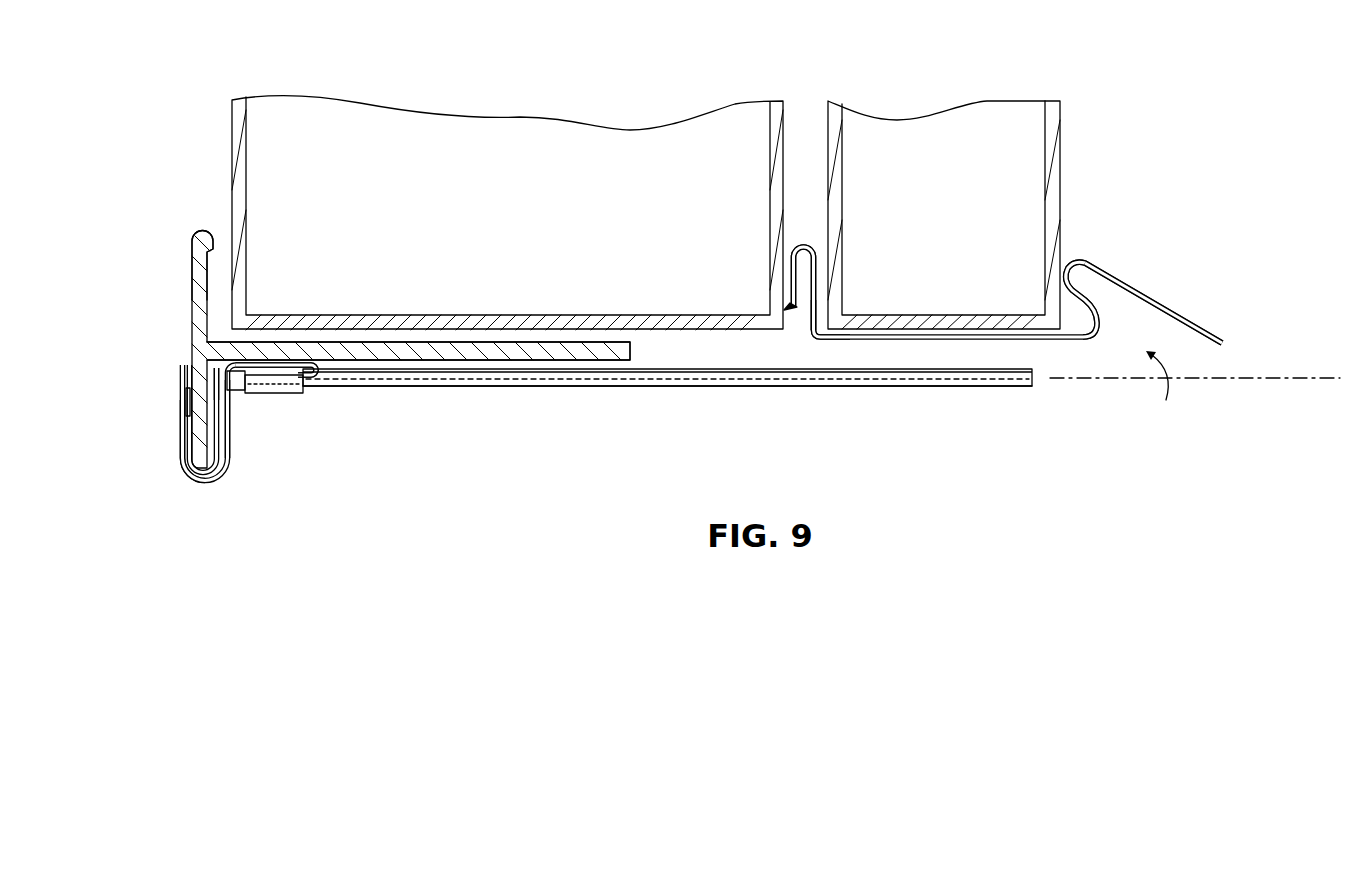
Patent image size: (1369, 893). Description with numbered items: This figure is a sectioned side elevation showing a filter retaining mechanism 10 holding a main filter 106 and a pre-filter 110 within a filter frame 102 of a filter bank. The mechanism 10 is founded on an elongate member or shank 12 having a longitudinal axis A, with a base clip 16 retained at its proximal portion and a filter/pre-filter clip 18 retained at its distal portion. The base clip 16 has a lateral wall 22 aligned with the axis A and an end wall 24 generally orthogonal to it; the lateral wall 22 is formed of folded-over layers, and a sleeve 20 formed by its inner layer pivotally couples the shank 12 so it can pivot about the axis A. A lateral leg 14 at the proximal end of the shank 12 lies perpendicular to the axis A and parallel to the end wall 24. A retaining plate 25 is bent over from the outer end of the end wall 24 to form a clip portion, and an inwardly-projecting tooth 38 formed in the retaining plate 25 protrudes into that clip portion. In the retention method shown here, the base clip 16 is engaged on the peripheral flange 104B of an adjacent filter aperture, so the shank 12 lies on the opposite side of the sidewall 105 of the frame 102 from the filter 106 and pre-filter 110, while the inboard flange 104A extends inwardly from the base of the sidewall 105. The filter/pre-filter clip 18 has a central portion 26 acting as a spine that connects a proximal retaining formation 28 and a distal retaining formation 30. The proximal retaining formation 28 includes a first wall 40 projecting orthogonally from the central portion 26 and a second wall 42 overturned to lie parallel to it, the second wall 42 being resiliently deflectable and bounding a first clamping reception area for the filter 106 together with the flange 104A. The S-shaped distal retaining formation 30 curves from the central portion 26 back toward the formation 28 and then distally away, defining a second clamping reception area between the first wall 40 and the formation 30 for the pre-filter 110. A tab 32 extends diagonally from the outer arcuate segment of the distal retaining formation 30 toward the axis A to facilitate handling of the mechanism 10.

The filter retaining mechanism 10 is at (885, 397).
The elongate member 12 is at (590, 388).
The lateral leg 14 is at (237, 394).
The base clip 16 is at (185, 492).
The filter/pre-filter clip 18 is at (1147, 384).
The sleeve 20 is at (280, 395).
The lateral wall 22 is at (312, 393).
The end wall 24 is at (229, 442).
The retaining plate 25 is at (181, 462).
The central portion 26 is at (1092, 345).
The proximal retaining formation 28 is at (805, 240).
The distal retaining formation 30 is at (1085, 261).
The tab 32 is at (1138, 290).
The tooth 38 is at (184, 400).
The first wall 40 is at (810, 342).
The second wall 42 is at (792, 312).
The filter frame 102 is at (182, 349).
The peripheral inboard flange 104A is at (190, 238).
The peripheral flange 104B is at (186, 442).
The sidewall 105 is at (486, 362).
The main filter 106 is at (625, 127).
The pre-filter 110 is at (920, 118).
The longitudinal axis A is at (1265, 385).